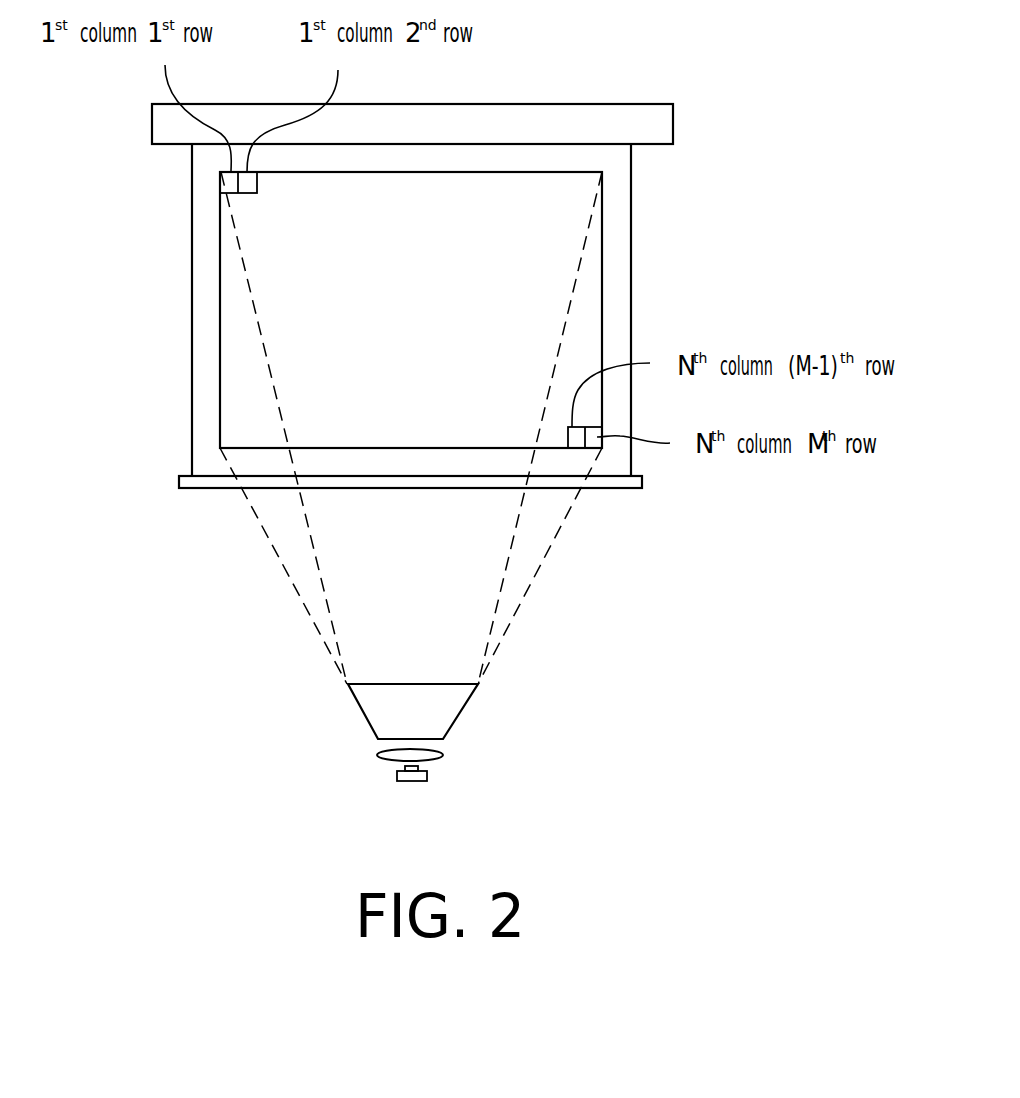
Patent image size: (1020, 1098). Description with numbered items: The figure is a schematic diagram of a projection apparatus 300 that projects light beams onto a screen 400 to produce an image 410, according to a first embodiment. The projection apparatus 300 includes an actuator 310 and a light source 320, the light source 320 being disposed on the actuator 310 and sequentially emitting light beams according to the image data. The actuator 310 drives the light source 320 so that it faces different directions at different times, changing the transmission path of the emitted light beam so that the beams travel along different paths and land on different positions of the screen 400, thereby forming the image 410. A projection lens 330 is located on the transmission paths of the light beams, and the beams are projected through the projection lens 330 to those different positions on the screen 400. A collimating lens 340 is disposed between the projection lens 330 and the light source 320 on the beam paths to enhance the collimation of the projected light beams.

The projection apparatus 300 is at (513, 745).
The actuator 310 is at (502, 802).
The light source 320 is at (418, 767).
The projection lens 330 is at (450, 708).
The collimating lens 340 is at (443, 757).
The screen 400 is at (631, 240).
The image 410 is at (603, 299).